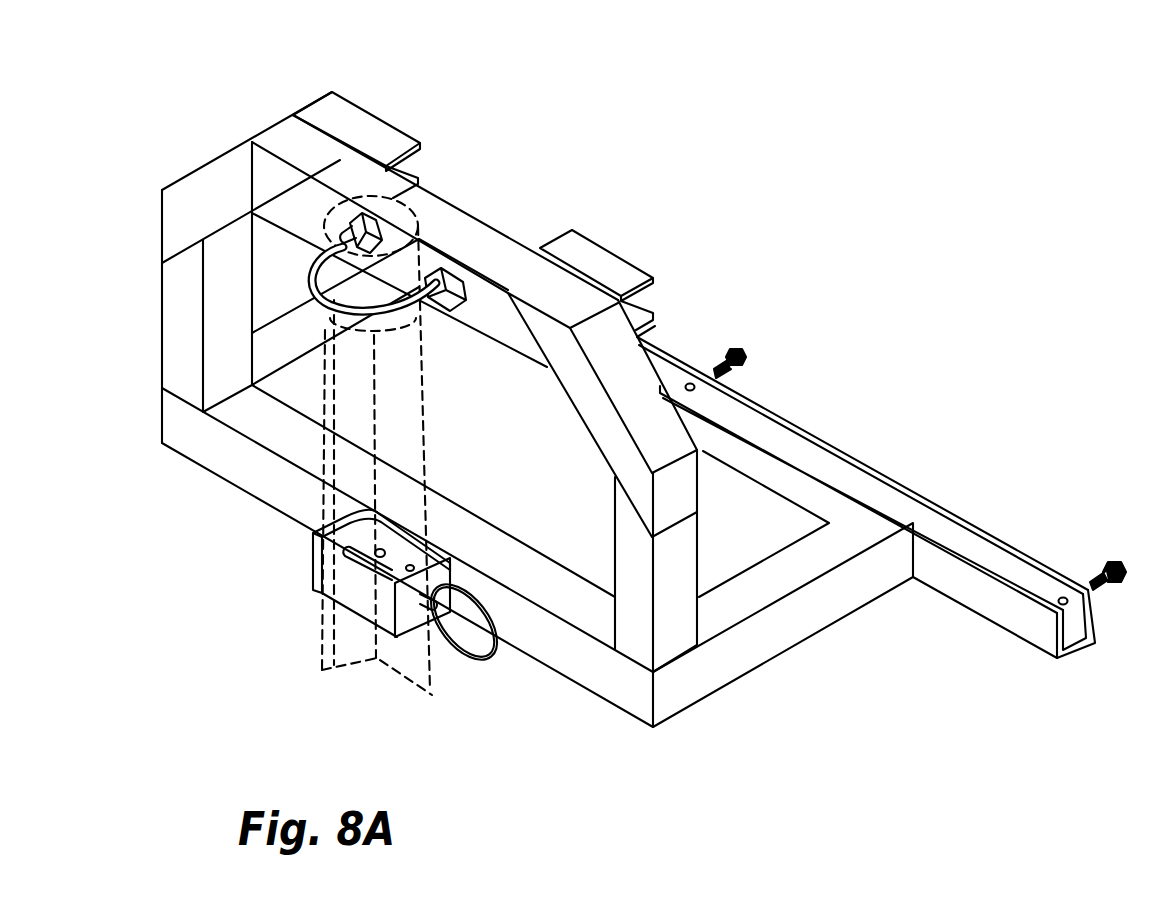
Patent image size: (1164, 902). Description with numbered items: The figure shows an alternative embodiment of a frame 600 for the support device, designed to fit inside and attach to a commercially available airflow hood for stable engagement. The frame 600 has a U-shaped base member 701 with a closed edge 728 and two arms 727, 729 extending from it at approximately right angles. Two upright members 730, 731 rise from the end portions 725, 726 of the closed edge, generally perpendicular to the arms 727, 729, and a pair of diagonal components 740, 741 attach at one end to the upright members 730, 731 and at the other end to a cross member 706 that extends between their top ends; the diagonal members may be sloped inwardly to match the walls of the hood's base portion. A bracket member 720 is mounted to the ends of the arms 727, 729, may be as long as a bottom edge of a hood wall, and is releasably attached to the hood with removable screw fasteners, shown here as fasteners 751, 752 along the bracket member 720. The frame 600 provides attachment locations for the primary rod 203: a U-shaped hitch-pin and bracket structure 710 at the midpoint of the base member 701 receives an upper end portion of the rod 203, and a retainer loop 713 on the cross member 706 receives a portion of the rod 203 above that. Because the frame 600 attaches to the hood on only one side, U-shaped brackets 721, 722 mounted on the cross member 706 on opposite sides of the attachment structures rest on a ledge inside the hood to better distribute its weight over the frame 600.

The frame 600 is at (217, 147).
The diagonal component 740 is at (193, 196).
The cross member 706 is at (458, 238).
The U-shaped bracket 721 is at (345, 128).
The U-shaped bracket 722 is at (575, 253).
The diagonal component 741 is at (613, 385).
The upright member 731 is at (613, 635).
The U-shaped base member 701 is at (748, 660).
The end portion of the closed edge 725 is at (167, 430).
The end portion of the closed edge 726 is at (645, 700).
The arm 729 is at (800, 572).
The arm 727 is at (288, 343).
The closed edge 728 is at (303, 457).
The primary rod 203 is at (322, 392).
The retainer loop 713 is at (350, 325).
The bracket member 720 is at (838, 472).
The first bolt 751 is at (752, 370).
The second bolt 752 is at (1060, 578).
The U-shaped hitch-pin and bracket structure 710 is at (410, 614).
The upright member 730 is at (182, 342).